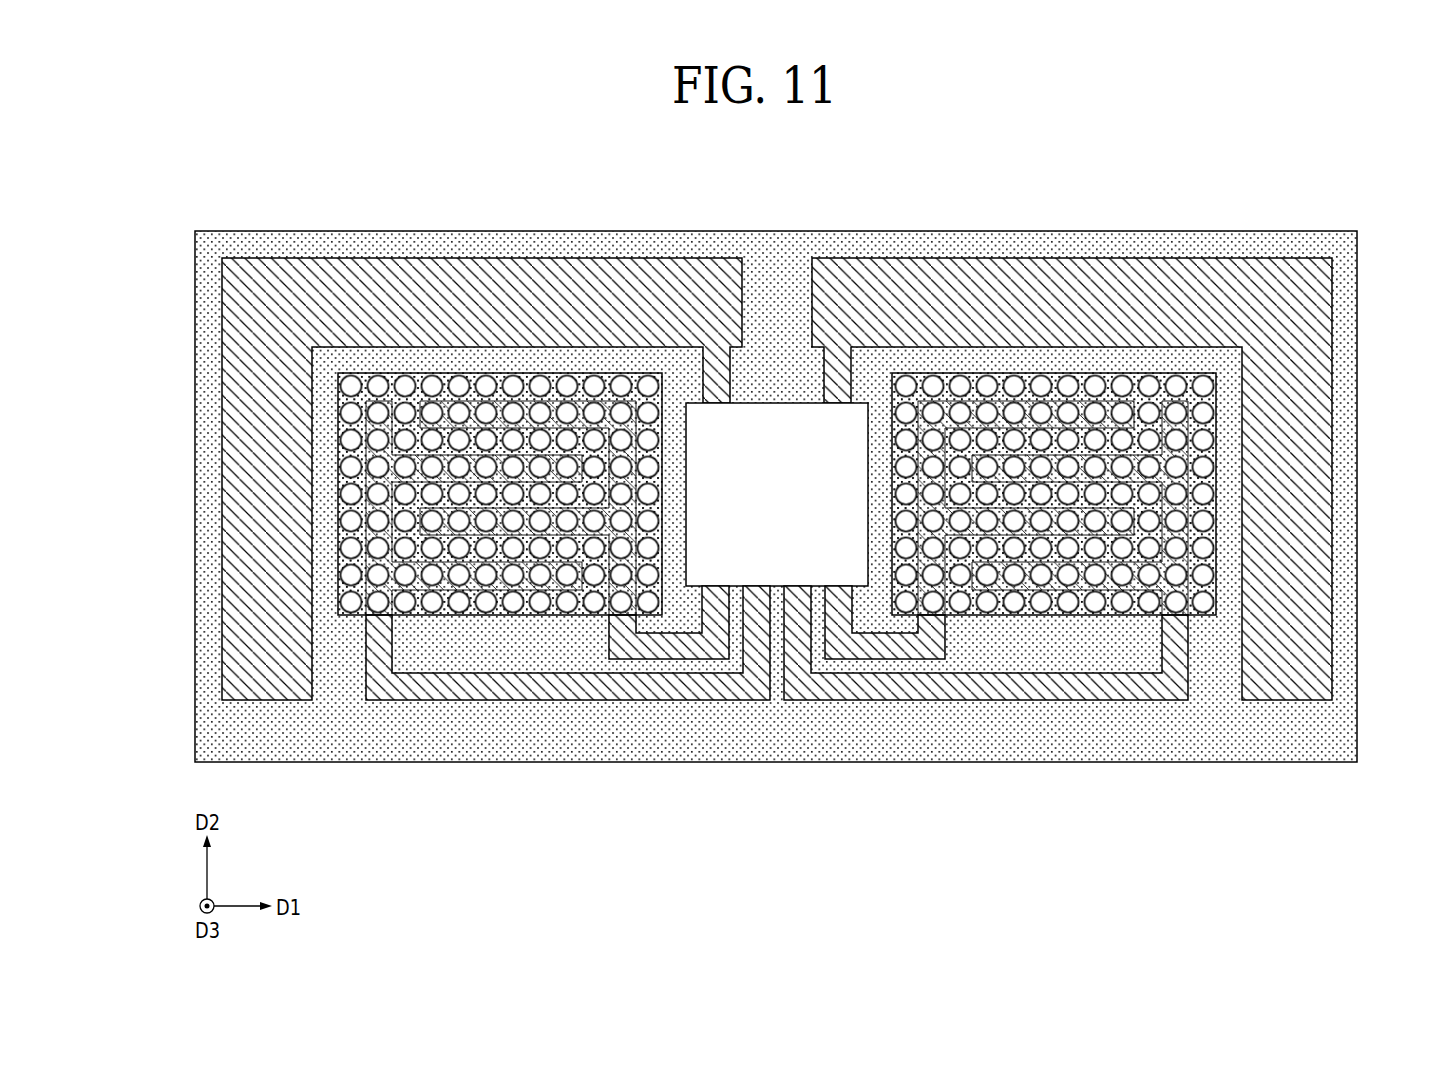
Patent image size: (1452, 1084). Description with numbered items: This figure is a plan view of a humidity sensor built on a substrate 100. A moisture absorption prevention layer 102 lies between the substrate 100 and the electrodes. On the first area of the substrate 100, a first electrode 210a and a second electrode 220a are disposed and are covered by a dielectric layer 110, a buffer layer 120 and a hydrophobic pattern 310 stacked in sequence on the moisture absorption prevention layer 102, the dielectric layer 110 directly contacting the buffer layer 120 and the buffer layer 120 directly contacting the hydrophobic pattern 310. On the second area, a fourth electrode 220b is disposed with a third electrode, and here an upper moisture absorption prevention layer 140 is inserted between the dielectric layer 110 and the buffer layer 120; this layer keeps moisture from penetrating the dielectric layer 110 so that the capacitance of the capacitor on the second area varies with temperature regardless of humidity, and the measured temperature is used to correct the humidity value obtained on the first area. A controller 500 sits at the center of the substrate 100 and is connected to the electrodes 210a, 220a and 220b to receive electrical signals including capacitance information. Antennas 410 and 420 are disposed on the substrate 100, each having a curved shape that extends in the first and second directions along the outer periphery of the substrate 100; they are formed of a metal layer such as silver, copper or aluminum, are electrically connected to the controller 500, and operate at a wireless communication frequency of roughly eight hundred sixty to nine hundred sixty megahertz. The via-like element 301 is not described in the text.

The substrate 100 is at (711, 496).
The moisture absorption prevention layer 102 is at (212, 512).
The dielectric layer 110 is at (750, 391).
The buffer layer 120 is at (750, 391).
The upper moisture absorption prevention layer 140 is at (1163, 391).
The first through via 301 is at (350, 387).
The hydrophobic pattern 310 is at (1207, 387).
The antenna 410 is at (530, 268).
The antenna 420 is at (1085, 268).
The first electrode 210a is at (488, 688).
The second electrode 220a is at (667, 651).
The fourth electrode 220b is at (880, 655).
The controller 500 is at (794, 507).